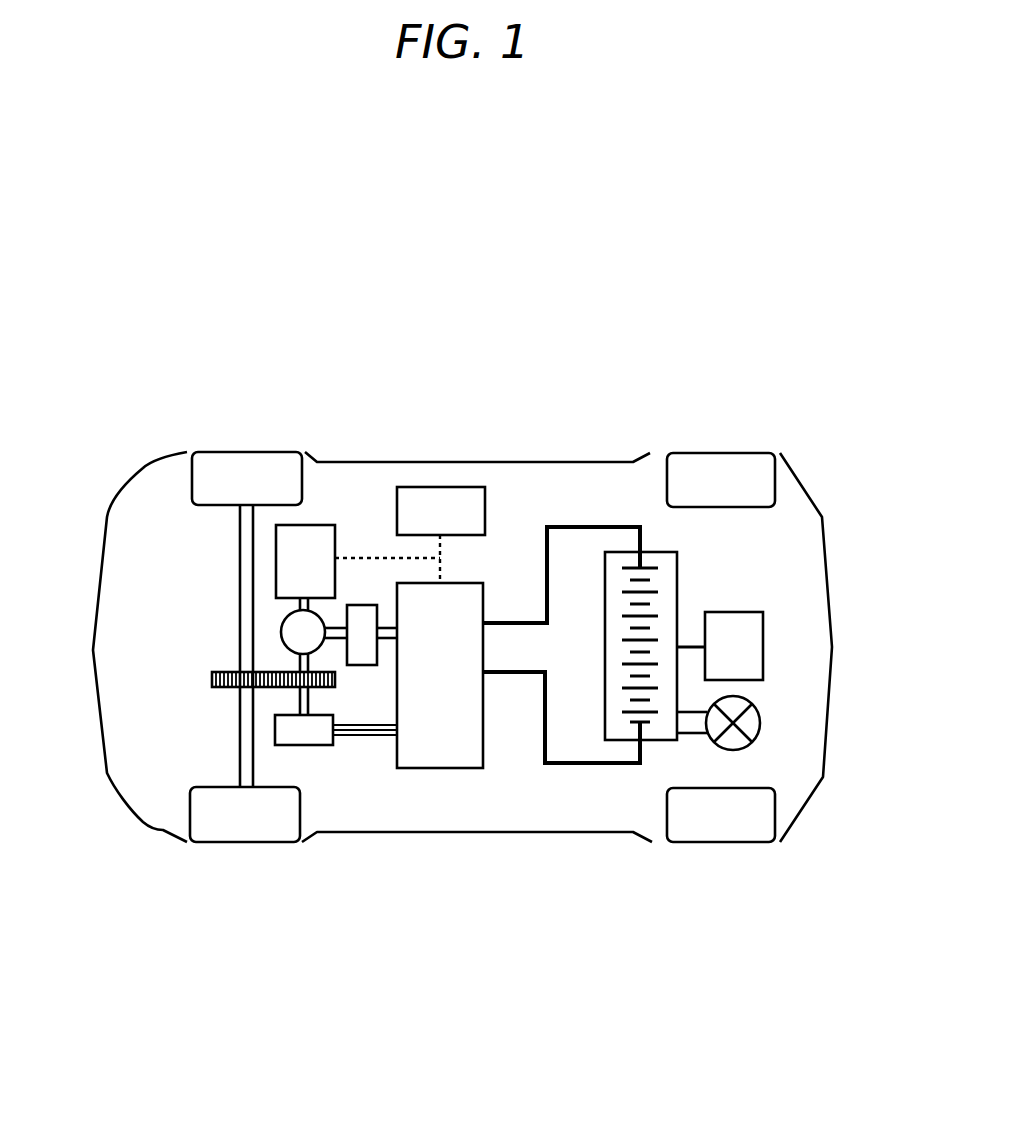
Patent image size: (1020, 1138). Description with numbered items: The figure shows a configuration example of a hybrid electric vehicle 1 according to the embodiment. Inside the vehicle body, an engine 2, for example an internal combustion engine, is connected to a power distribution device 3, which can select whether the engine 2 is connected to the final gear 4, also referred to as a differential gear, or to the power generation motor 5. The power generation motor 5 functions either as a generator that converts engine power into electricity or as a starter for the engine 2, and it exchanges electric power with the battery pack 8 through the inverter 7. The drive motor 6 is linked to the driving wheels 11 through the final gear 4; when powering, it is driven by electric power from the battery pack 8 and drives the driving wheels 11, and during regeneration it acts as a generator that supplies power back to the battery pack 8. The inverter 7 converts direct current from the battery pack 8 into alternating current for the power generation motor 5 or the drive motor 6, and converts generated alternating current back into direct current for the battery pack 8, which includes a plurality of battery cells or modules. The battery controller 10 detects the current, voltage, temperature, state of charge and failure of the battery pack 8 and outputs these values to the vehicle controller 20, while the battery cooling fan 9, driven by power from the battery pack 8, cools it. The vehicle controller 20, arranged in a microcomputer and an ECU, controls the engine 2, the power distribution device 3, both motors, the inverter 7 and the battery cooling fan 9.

The hybrid electric vehicle 1 is at (558, 384).
The engine 2 is at (318, 525).
The power distribution device 3 is at (281, 630).
The final gear 4 is at (212, 678).
The power generation motor 5 is at (380, 605).
The drive motor 6 is at (307, 745).
The inverter 7 is at (438, 768).
The battery pack 8 is at (677, 577).
The battery cooling fan 9 is at (760, 723).
The battery controller 10 is at (763, 637).
The driving wheels 11 is at (245, 465).
The vehicle controller 20 is at (447, 487).